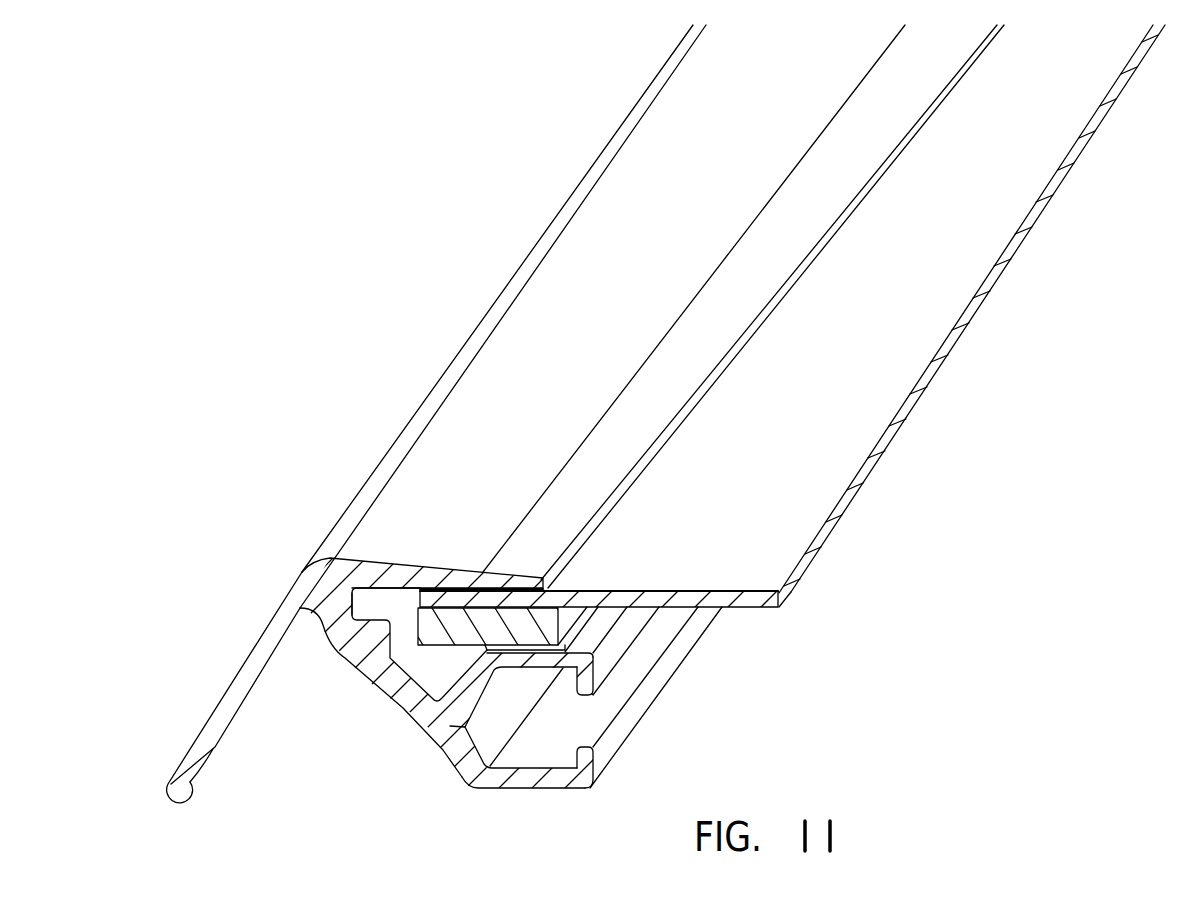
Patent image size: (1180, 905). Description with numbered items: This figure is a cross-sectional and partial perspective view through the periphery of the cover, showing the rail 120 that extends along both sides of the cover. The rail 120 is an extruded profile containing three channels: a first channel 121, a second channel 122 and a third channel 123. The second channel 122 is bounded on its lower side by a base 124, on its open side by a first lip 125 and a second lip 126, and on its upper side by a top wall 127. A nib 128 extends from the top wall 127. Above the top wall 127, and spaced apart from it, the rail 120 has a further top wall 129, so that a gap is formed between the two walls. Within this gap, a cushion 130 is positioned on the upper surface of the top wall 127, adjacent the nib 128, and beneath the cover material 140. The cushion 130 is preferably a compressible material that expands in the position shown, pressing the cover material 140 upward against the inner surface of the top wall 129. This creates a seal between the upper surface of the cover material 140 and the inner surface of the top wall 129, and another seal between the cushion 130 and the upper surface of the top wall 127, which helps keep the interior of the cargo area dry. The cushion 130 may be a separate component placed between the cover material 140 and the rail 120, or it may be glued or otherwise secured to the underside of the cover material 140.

The rail 120 is at (252, 651).
The first channel 121 is at (303, 757).
The second channel 122 is at (547, 748).
The third channel 123 is at (373, 590).
The base 124 is at (505, 785).
The first lip 125 is at (596, 758).
The second lip 126 is at (593, 690).
The top wall 127 is at (517, 658).
The nib 128 is at (783, 603).
The top wall 129 is at (428, 452).
The cushion 130 is at (542, 623).
The cover material 140 is at (900, 398).